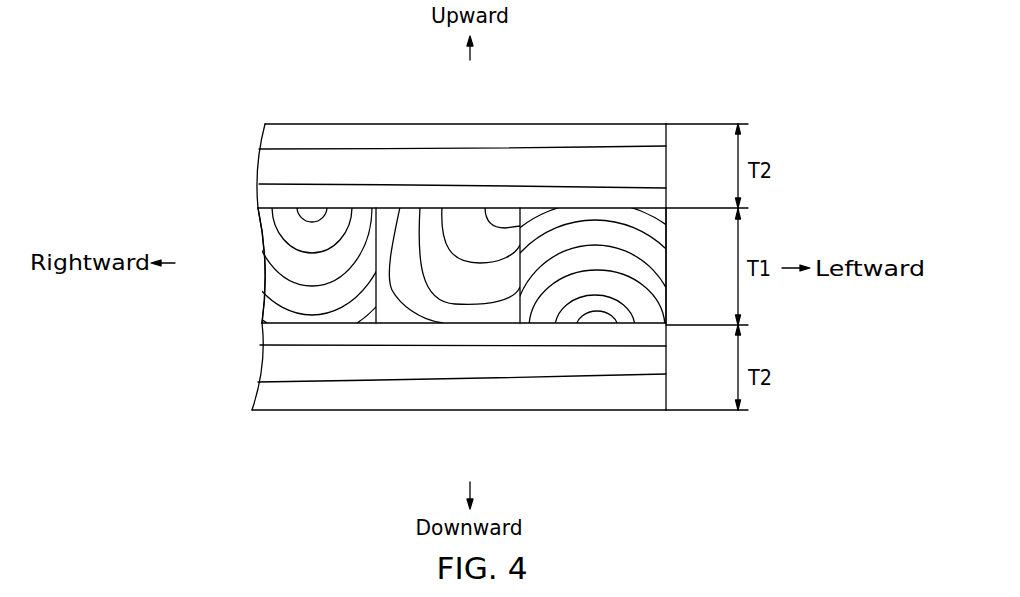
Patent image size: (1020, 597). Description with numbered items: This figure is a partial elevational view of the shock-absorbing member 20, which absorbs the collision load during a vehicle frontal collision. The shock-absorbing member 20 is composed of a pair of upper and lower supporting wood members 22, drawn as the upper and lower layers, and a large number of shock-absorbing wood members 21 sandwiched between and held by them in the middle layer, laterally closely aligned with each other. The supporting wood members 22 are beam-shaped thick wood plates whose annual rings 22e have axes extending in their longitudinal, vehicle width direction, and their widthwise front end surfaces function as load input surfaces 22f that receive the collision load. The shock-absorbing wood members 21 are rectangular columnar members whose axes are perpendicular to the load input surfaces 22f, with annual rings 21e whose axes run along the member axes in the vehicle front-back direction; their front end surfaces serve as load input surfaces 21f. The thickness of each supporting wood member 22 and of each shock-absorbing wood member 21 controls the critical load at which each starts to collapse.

The shock-absorbing member 20 is at (385, 115).
The shock-absorbing wood member 21 is at (291, 262).
The annual rings of shock-absorbing wood member 21e is at (293, 291).
The load input surface of shock-absorbing wood member 21f is at (293, 236).
The supporting wood member 22 is at (489, 165).
The annual rings of supporting wood member 22e is at (562, 148).
The load input surface of supporting wood member 22f is at (450, 160).